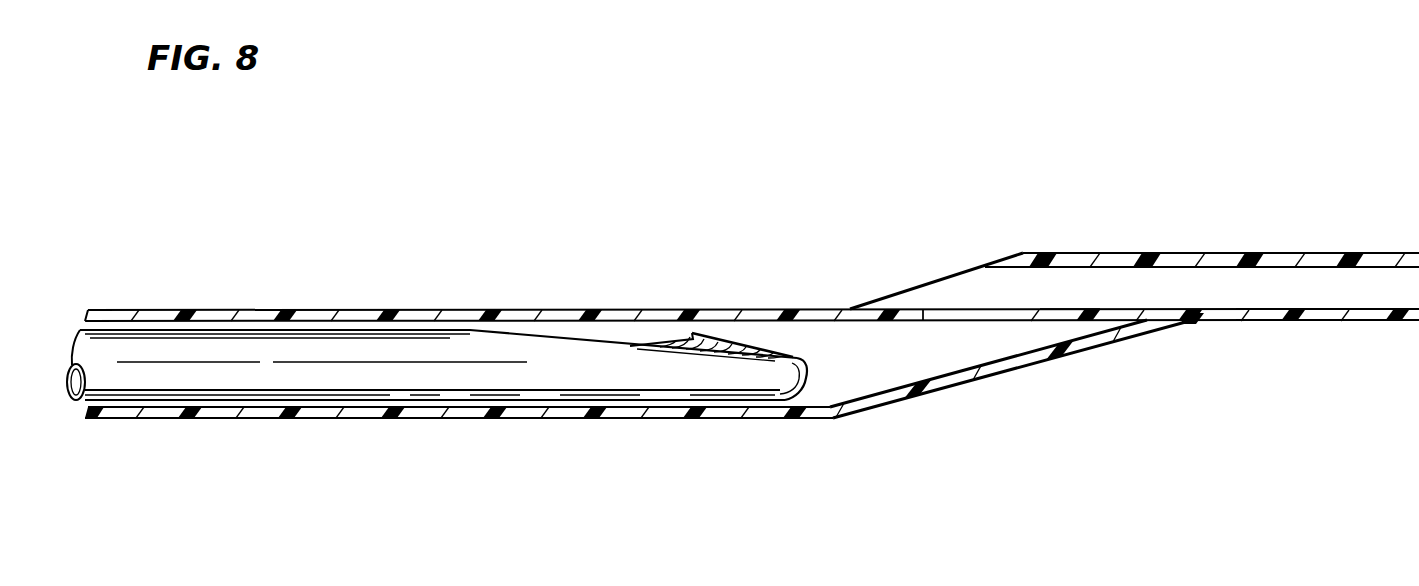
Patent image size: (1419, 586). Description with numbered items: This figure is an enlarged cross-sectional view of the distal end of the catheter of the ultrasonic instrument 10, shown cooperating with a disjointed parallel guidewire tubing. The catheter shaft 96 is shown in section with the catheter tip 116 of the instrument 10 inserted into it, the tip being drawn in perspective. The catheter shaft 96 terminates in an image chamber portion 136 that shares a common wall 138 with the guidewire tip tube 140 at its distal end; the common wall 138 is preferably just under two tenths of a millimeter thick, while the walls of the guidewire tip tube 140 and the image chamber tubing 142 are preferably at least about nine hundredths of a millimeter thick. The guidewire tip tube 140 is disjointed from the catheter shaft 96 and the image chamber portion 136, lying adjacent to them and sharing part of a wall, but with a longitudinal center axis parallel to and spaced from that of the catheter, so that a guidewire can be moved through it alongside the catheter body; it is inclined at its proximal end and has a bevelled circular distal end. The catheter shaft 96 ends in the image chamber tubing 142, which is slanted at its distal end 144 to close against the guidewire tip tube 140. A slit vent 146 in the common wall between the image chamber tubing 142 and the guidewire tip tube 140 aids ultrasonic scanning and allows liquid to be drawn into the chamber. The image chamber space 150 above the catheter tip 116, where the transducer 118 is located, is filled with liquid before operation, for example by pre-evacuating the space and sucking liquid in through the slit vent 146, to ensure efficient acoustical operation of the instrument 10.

The ultrasonic instrument 10 is at (334, 446).
The catheter shaft 96 is at (620, 308).
The catheter tip 116 is at (410, 353).
The transducer 118 is at (716, 357).
The image chamber portion 136 is at (1203, 335).
The common wall 138 is at (1067, 307).
The guidewire tip tube 140 is at (1277, 253).
The image chamber tubing 142 is at (942, 370).
The distal end 144 is at (1087, 338).
The slit vent 146 is at (992, 312).
The image chamber space 150 is at (965, 328).